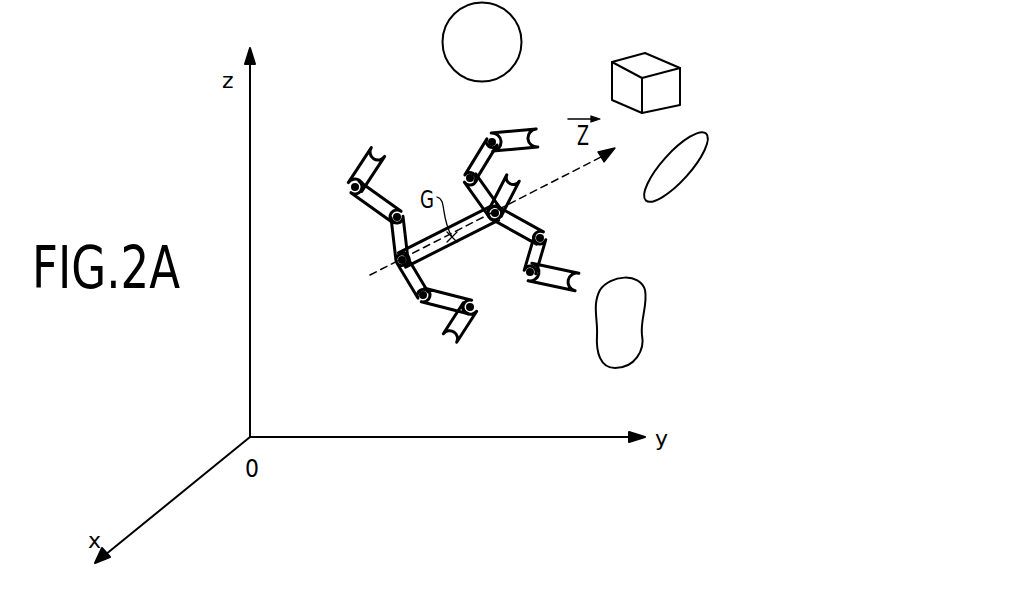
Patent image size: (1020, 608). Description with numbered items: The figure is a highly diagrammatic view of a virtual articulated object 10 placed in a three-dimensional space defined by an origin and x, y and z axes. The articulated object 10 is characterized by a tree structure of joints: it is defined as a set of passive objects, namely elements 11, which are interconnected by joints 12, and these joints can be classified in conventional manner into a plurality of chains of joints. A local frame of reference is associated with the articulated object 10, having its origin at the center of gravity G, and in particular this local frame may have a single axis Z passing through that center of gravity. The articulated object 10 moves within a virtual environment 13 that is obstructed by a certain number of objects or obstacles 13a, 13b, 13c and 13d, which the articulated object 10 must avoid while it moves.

The virtual articulated object 10 is at (393, 135).
The elements 11 is at (527, 140).
The joints 12 is at (355, 187).
The virtual environment 13 is at (780, 136).
The obstacle 13a is at (485, 33).
The obstacle 13b is at (667, 80).
The obstacle 13c is at (690, 152).
The obstacle 13d is at (630, 342).